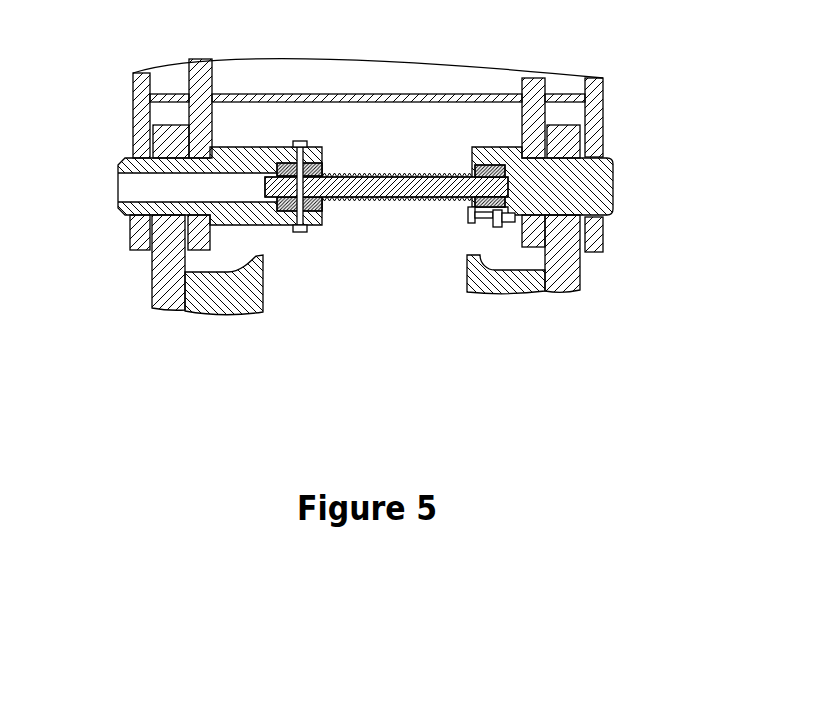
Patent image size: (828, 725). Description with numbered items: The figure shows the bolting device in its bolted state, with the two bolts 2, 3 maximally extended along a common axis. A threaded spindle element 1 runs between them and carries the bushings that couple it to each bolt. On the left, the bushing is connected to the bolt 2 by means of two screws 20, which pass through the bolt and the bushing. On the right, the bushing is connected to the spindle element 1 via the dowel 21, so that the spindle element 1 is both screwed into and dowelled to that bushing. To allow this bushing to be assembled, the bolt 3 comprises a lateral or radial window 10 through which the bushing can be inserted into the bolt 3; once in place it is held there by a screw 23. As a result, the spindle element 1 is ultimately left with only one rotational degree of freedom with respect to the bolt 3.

The spindle element 1 is at (393, 184).
The bolt 2 is at (124, 161).
The bolt 3 is at (597, 184).
The window 10 is at (585, 198).
The screws 20 is at (301, 151).
The dowel 21 is at (492, 189).
The screw 23 is at (501, 224).